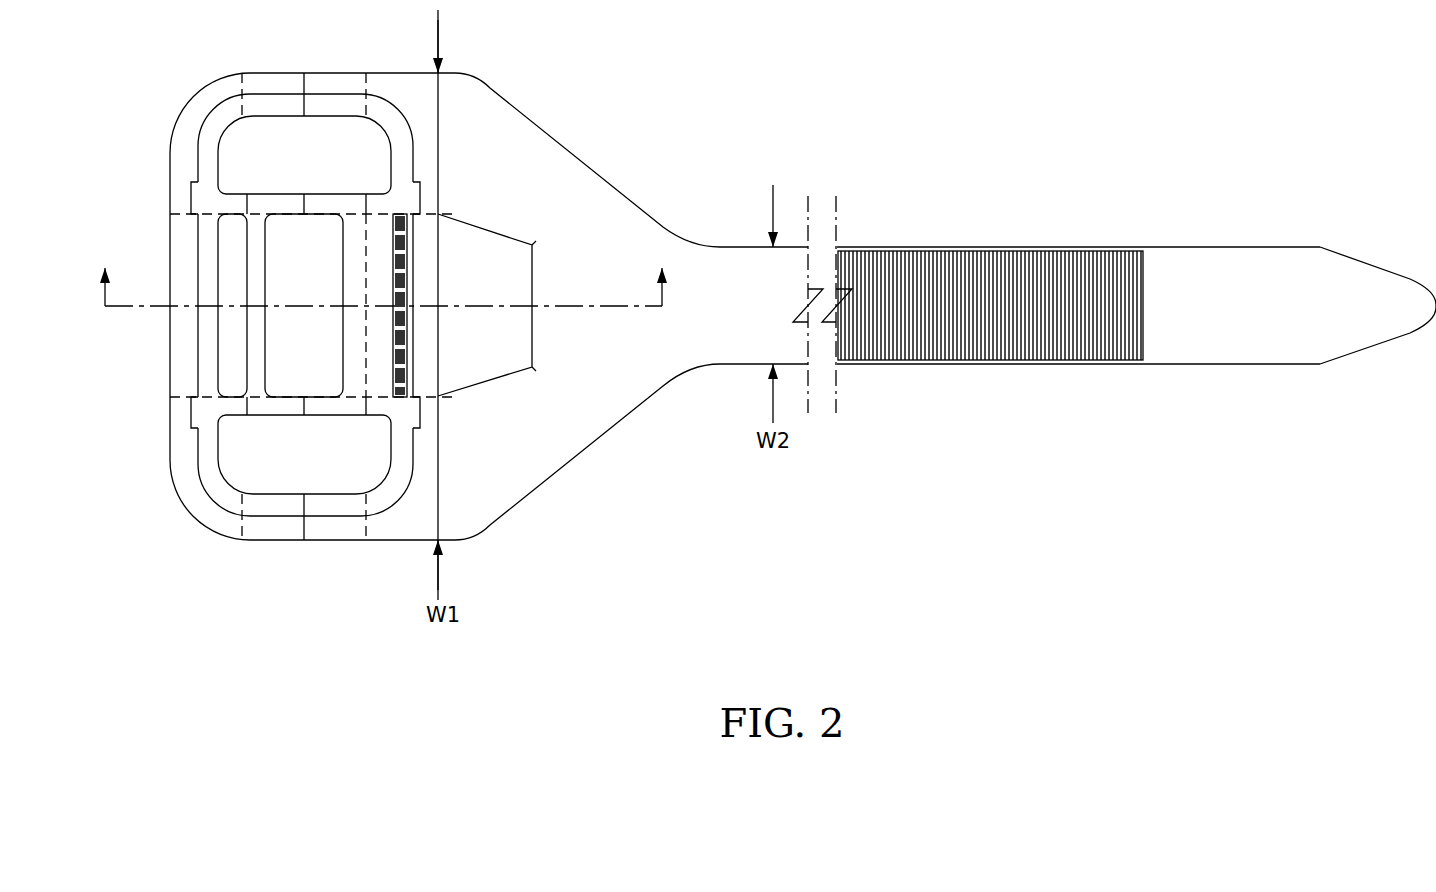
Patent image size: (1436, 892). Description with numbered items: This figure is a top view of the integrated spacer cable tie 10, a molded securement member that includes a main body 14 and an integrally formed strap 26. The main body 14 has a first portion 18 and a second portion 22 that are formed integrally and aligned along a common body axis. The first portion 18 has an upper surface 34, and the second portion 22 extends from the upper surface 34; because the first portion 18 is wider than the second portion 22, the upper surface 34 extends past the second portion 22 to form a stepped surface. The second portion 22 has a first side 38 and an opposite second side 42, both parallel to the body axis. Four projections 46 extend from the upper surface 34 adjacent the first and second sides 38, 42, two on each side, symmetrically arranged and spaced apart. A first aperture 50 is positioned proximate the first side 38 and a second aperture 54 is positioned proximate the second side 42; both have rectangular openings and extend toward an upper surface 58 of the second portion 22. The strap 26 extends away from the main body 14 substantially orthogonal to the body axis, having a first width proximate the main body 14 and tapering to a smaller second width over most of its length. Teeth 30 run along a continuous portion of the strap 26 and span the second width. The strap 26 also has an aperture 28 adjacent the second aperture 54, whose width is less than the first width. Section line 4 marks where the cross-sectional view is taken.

The section line 4- 4 is at (383, 274).
The integrated spacer cable tie 10 is at (963, 165).
The main body 14 is at (118, 103).
The first portion 18 is at (274, 548).
The second portion 22 is at (283, 92).
The strap 26 is at (1222, 245).
The aperture 28 is at (504, 350).
The teeth 30 is at (988, 350).
The upper surface 34 is at (400, 523).
The first side 38 is at (438, 143).
The second side 42 is at (197, 355).
The projections 46 is at (190, 200).
The first aperture 50 is at (231, 372).
The second aperture 54 is at (381, 352).
The upper surface 58 is at (345, 105).